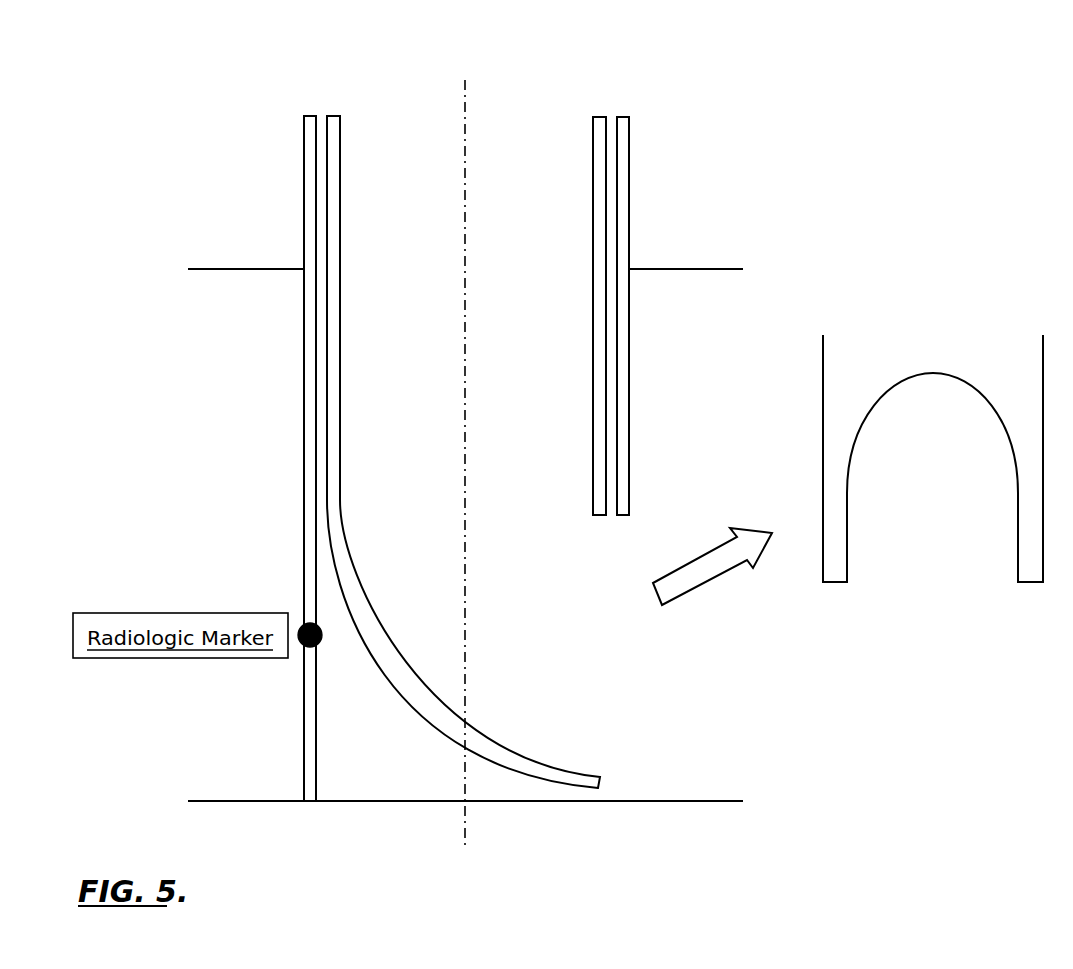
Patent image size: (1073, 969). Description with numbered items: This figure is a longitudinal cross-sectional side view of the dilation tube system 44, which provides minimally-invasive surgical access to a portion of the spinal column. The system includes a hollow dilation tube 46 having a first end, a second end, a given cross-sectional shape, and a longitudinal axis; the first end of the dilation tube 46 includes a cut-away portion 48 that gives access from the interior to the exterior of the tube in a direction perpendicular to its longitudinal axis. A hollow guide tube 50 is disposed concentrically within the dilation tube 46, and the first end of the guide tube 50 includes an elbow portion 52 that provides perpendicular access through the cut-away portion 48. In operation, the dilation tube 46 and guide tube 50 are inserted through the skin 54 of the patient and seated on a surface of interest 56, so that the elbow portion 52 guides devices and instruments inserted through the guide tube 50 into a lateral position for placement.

The dilation tube system 44 is at (641, 114).
The dilation tube 46 is at (629, 210).
The cut-away portion 48 is at (633, 662).
The guide tube 50 is at (327, 208).
The elbow portion 52 is at (362, 643).
The skin 54 is at (723, 267).
The surface of interest 56 is at (723, 799).